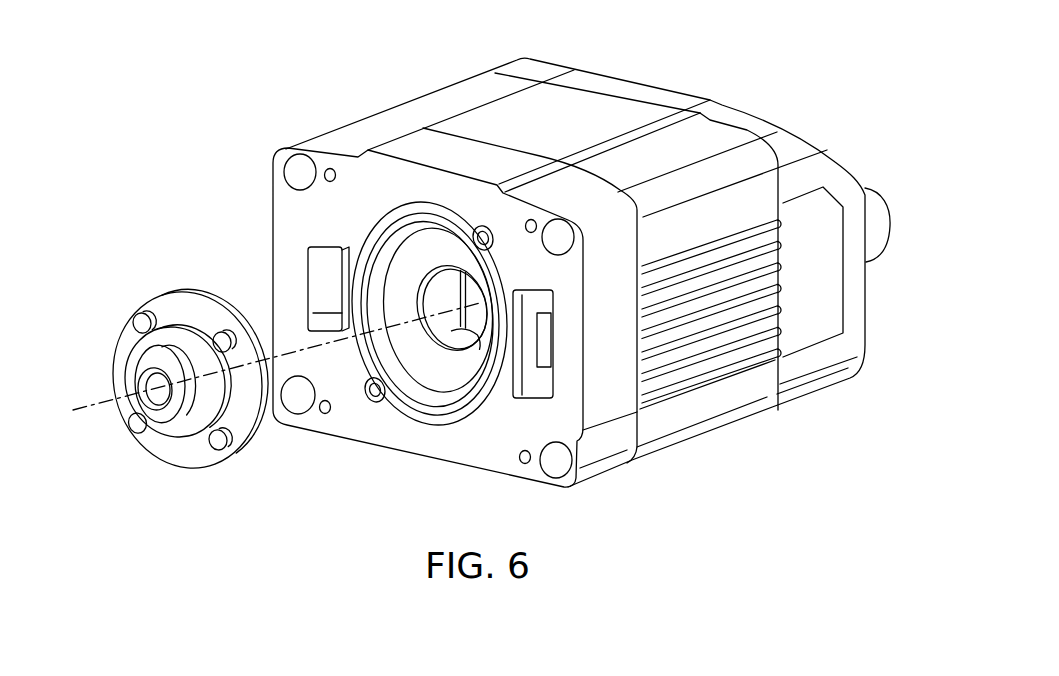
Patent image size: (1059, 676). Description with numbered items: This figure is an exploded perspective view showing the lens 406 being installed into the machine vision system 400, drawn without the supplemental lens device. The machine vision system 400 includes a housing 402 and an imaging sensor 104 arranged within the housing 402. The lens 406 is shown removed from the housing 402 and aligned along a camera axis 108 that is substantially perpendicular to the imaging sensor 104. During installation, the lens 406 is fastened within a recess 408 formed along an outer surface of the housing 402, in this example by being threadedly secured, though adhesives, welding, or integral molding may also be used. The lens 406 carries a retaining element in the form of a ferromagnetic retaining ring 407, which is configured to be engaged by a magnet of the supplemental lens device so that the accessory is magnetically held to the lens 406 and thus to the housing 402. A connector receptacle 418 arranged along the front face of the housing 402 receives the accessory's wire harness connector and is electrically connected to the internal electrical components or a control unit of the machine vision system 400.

The machine vision system 400 is at (300, 127).
The housing 402 is at (423, 146).
The lens 406 is at (147, 287).
The retaining ring 407 is at (186, 456).
The camera axis 108 is at (100, 400).
The recess 408 is at (428, 297).
The imaging sensor 104 is at (477, 313).
The connector receptacle 418 is at (540, 357).